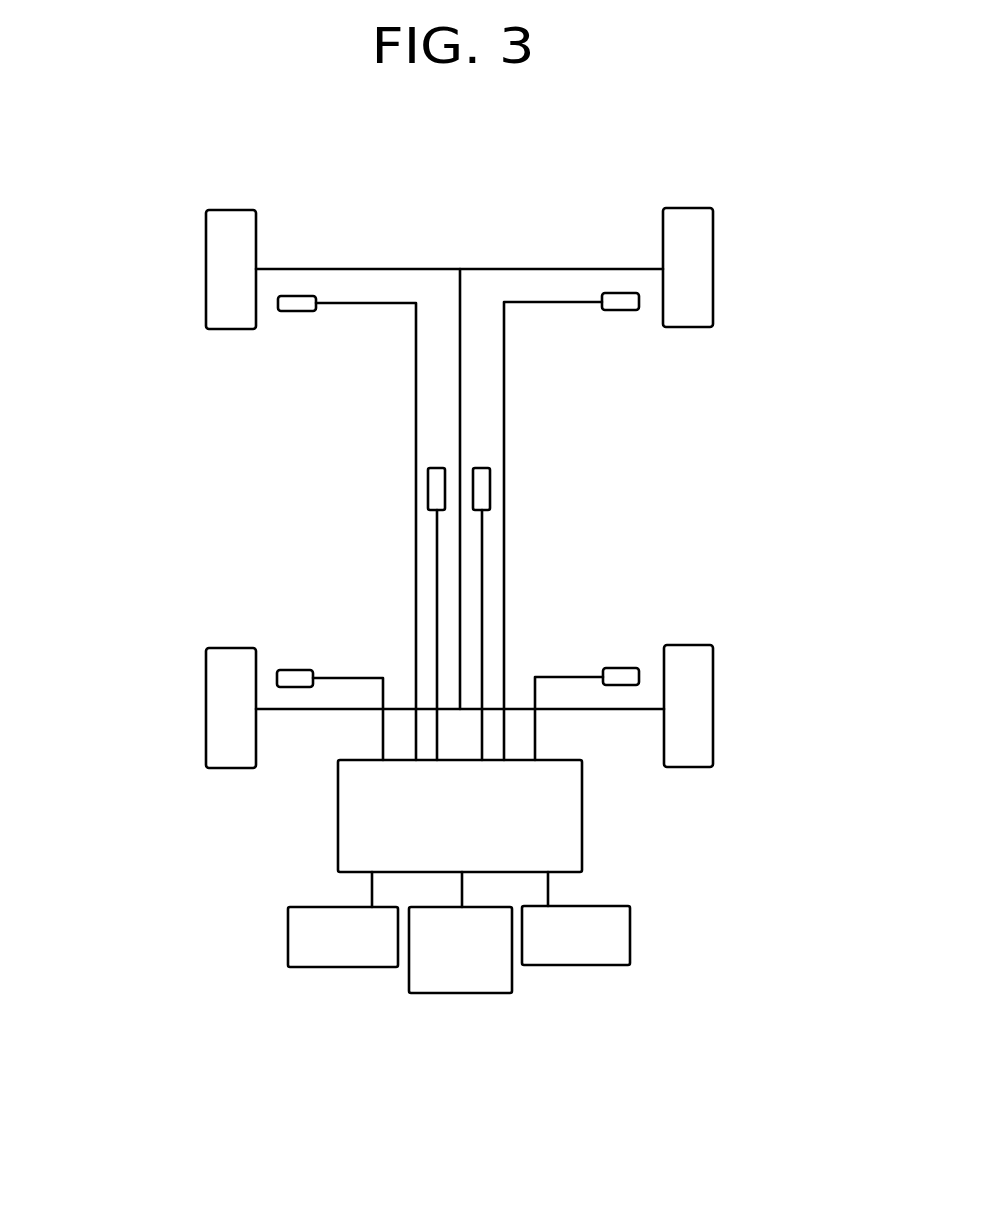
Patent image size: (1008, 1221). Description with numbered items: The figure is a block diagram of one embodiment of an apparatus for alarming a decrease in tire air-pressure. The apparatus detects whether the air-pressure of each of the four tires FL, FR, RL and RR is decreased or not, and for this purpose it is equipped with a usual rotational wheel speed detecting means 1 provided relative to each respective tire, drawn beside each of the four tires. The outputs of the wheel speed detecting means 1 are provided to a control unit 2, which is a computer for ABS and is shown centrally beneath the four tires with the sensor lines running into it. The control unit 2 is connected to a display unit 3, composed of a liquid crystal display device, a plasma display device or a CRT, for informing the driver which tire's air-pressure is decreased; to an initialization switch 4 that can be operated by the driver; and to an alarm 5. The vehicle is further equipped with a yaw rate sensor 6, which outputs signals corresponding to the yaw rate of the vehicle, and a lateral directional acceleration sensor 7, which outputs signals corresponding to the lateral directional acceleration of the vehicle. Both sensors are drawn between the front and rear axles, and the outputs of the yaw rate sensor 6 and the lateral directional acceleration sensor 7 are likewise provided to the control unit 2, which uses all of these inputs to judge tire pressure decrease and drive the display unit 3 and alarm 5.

The wheel speed detecting means 1 is at (287, 305).
The control unit 2 is at (582, 840).
The display unit 3 is at (288, 945).
The initialization switch 4 is at (409, 978).
The alarm 5 is at (630, 938).
The yaw rate sensor 6 is at (438, 488).
The lateral directional acceleration sensor 7 is at (482, 490).
The front left tire FL is at (218, 246).
The front right tire FR is at (697, 247).
The rear left tire RL is at (220, 693).
The rear right tire RR is at (697, 693).